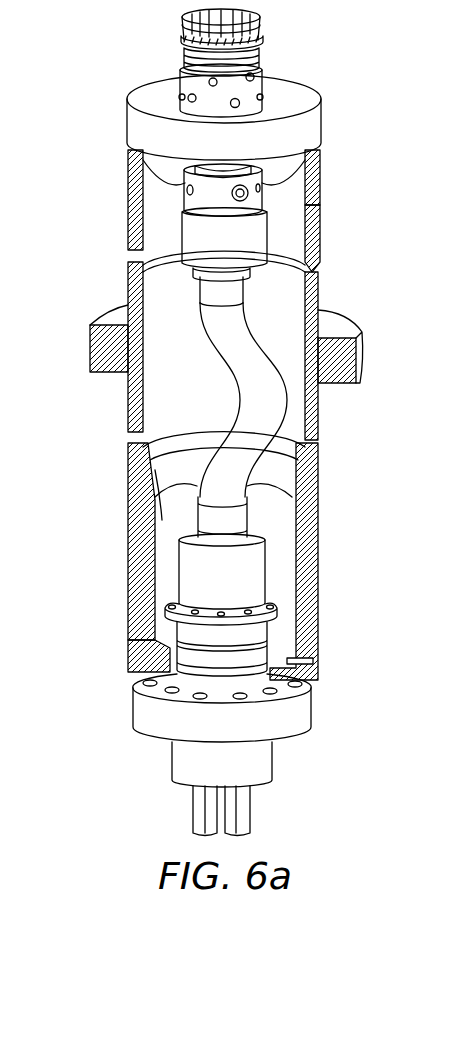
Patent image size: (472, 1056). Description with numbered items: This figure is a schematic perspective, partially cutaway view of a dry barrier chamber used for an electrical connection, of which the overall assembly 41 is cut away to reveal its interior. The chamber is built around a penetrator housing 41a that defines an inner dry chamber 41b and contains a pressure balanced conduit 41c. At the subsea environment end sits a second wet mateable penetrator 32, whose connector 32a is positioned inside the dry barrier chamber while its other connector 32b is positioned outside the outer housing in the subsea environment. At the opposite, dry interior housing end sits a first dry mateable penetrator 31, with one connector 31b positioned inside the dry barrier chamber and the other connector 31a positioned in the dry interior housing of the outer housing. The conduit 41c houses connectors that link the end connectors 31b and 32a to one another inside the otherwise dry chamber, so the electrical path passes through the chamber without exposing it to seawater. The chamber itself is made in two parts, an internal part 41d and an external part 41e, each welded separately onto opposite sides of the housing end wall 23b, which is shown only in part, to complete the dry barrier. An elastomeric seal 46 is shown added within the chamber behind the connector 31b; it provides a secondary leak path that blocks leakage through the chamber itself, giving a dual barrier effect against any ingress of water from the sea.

The second wet mateable penetrator 32 is at (157, 83).
The connector 32b is at (264, 58).
The connector 32a is at (133, 172).
The external part 41e is at (319, 174).
The penetrator housing 41a is at (319, 228).
The housing 41 is at (354, 427).
The housing end wall 23b is at (90, 352).
The conduit 41c is at (234, 358).
The inner dry chamber 41b is at (165, 462).
The internal part 41d is at (320, 550).
The elastomeric seal 46 is at (143, 656).
The connector 31b is at (270, 630).
The first dry mateable penetrator 31 is at (140, 708).
The connector 31a is at (279, 771).